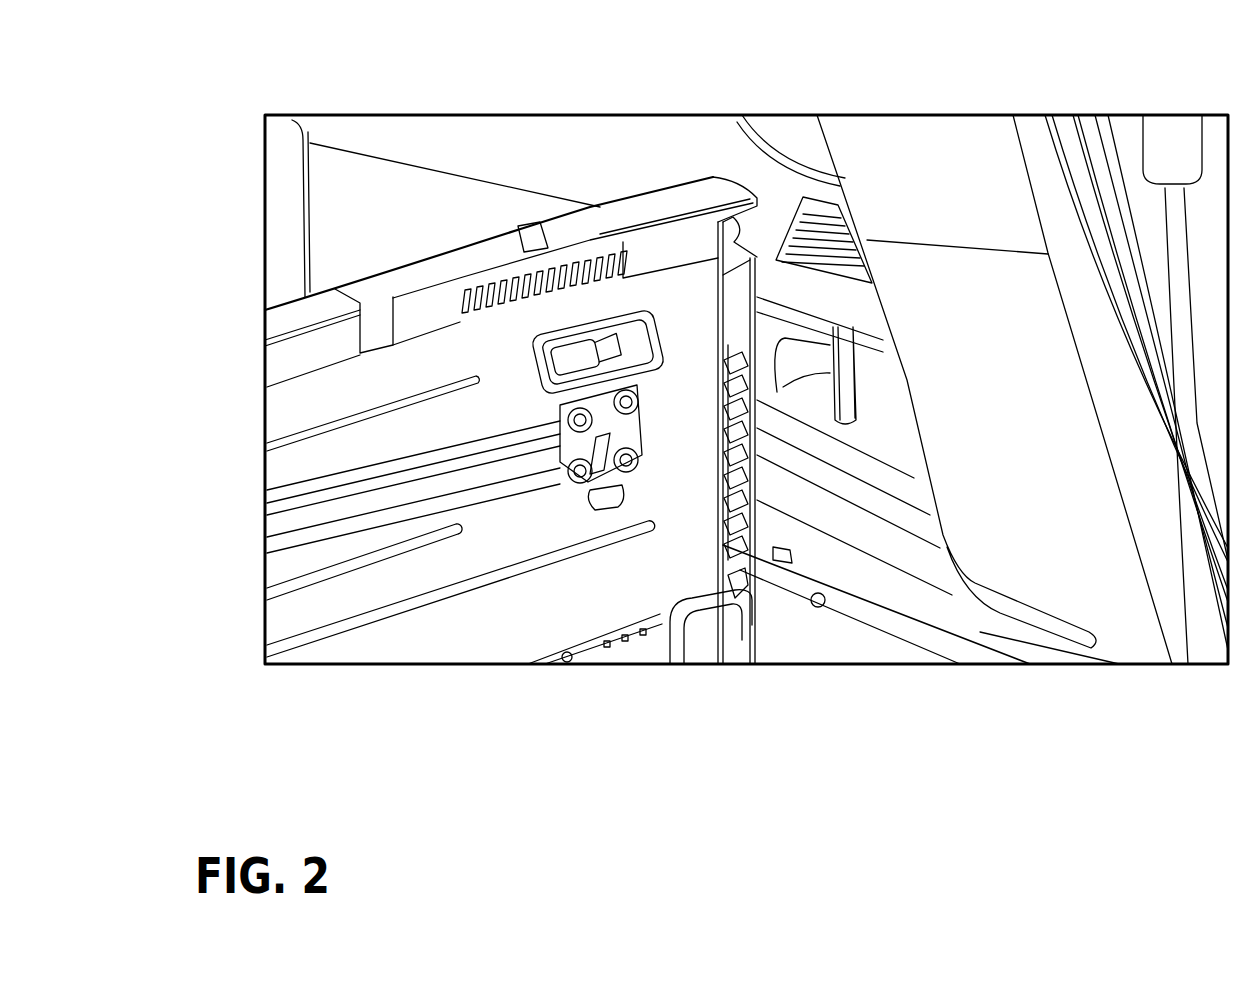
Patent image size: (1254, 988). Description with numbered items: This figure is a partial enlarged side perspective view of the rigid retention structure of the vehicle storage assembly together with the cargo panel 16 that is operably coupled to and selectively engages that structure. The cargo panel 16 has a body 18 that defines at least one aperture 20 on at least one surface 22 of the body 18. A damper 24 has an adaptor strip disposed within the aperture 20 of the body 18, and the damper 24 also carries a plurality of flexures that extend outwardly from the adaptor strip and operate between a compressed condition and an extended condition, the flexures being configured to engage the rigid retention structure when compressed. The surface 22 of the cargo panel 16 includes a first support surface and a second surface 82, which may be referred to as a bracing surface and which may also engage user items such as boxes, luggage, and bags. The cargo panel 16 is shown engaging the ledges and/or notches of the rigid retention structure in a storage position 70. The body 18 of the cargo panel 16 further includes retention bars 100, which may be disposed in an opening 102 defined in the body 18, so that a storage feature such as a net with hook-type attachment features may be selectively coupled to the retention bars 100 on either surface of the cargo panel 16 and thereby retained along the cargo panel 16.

The cargo panel 16 is at (345, 279).
The body 18 is at (693, 247).
The aperture 20 is at (525, 262).
The surface 22 is at (473, 627).
The damper 24 is at (632, 243).
The storage position 70 is at (372, 378).
The second surface 82 is at (310, 407).
The retention bars 100 is at (588, 352).
The opening 102 is at (555, 358).